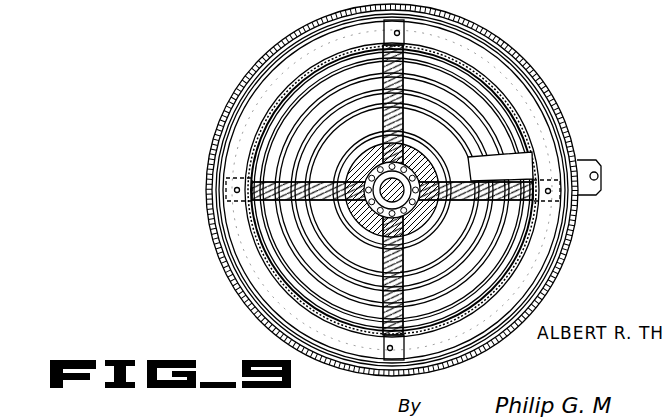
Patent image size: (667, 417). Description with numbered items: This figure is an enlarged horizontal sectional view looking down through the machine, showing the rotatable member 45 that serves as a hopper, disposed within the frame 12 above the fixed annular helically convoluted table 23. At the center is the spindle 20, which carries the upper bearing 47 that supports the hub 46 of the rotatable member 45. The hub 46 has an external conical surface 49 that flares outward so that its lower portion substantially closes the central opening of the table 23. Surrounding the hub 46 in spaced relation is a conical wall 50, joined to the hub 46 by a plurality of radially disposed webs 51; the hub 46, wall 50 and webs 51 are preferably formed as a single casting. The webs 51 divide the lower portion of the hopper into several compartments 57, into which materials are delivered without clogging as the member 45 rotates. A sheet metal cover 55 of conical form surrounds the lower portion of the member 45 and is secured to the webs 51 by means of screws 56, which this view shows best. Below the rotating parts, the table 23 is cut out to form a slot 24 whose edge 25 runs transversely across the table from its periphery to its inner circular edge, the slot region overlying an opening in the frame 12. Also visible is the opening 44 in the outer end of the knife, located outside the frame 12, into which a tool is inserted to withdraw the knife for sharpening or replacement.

The frame 12 is at (208, 169).
The spindle 20 is at (392, 190).
The annular helically convoluted table 23 is at (302, 94).
The slot 24 is at (508, 156).
The edge of slot 25 is at (500, 166).
The opening in knife 44 is at (599, 176).
The rotatable member 45 is at (248, 258).
The hub 46 is at (426, 158).
The upper bearing 47 is at (380, 146).
The external conical surface 49 is at (448, 248).
The conical wall 50 is at (558, 276).
The radially disposed webs 51 is at (403, 122).
The sheet metal cover 55 is at (492, 64).
The screws 56 is at (400, 33).
The compartments 57 is at (322, 185).